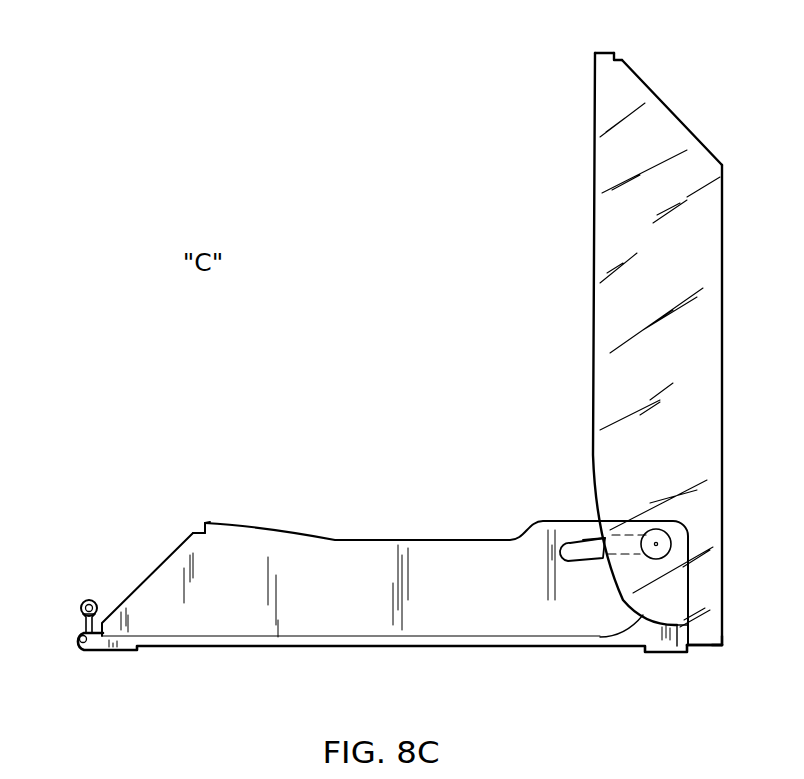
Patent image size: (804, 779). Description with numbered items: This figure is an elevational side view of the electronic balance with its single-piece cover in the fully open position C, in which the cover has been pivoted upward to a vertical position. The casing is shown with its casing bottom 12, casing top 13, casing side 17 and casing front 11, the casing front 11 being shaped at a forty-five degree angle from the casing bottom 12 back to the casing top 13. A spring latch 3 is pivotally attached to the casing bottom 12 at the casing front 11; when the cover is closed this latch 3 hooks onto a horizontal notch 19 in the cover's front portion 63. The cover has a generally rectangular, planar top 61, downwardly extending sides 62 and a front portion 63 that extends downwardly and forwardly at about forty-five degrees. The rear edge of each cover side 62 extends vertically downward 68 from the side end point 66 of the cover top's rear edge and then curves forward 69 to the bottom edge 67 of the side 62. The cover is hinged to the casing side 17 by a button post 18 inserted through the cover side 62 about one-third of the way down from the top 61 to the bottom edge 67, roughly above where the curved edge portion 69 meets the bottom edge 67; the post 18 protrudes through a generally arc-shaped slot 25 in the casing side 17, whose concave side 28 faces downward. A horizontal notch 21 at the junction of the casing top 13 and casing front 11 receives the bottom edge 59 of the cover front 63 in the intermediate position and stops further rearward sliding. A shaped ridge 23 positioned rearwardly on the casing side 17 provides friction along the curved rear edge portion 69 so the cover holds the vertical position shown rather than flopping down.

The spring latch 3 is at (82, 625).
The casing front 11 is at (90, 568).
The casing bottom 12 is at (125, 650).
The casing top 13 is at (340, 502).
The casing side 17 is at (324, 603).
The button post 18 is at (655, 556).
The horizontal notch 19 is at (618, 56).
The horizontal notch 21 is at (200, 522).
The shaped ridge 23 is at (647, 628).
The arc-shaped slot 25 is at (586, 540).
The concave side 28 is at (612, 568).
The bottom edge of cover front 59 is at (595, 52).
The cover top 61 is at (722, 380).
The cover side 62 is at (641, 373).
The cover front portion 63 is at (687, 127).
The side end point 66 is at (722, 645).
The bottom edge of cover side 67 is at (593, 327).
The vertical portion of rear side edge 68 is at (705, 647).
The curved rear side edge portion 69 is at (640, 616).